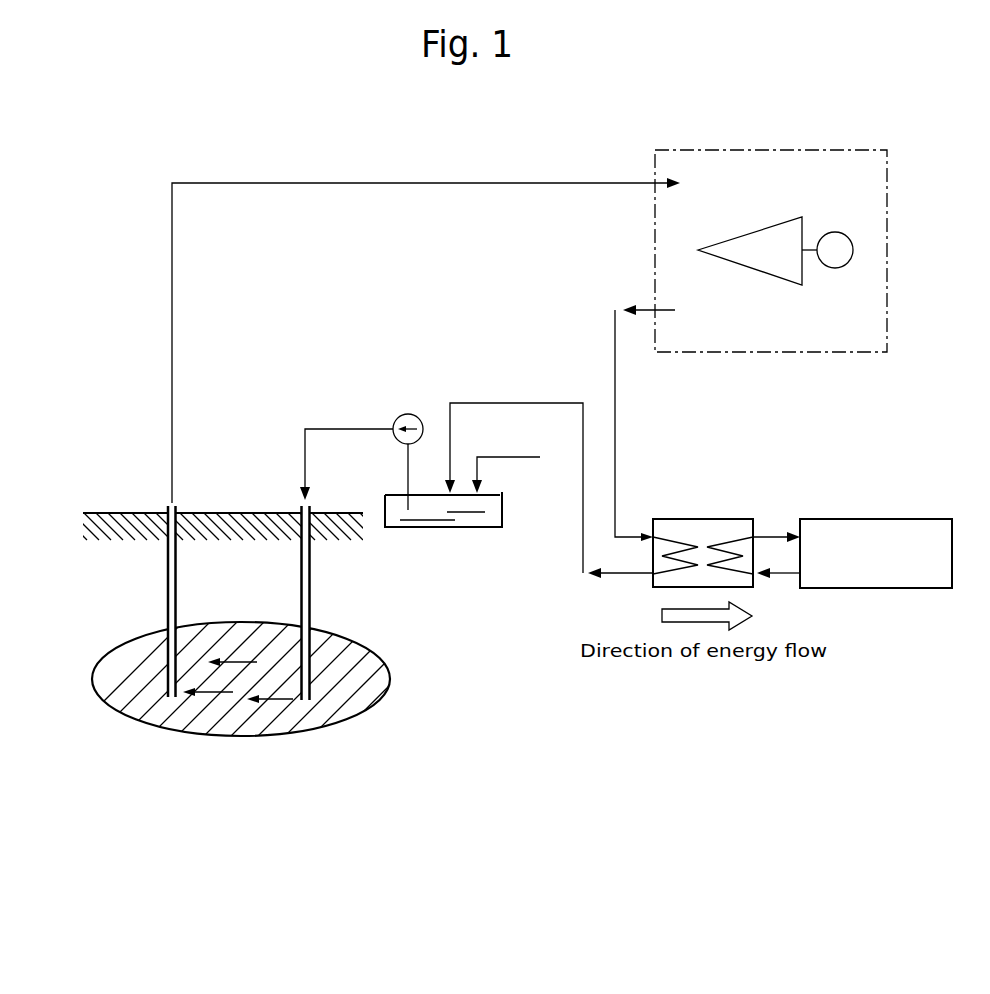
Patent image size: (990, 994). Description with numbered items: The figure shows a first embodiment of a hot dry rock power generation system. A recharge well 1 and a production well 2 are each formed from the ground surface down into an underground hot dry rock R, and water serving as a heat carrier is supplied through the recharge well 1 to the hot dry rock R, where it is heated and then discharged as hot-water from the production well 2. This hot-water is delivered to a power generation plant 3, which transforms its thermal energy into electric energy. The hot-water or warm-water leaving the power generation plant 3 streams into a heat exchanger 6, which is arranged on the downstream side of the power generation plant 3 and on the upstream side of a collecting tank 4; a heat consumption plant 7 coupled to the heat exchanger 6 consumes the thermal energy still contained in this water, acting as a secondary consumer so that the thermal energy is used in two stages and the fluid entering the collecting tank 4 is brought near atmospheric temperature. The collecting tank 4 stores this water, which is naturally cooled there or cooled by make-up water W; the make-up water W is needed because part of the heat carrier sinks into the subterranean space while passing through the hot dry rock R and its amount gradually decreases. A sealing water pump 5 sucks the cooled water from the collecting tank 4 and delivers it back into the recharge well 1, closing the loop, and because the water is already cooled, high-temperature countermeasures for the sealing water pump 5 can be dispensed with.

The recharge well 1 is at (311, 578).
The production well 2 is at (177, 578).
The power generation plant 3 is at (810, 354).
The collecting tank 4 is at (503, 512).
The sealing water pump 5 is at (408, 414).
The heat exchanger 6 is at (705, 518).
The heat consumption plant 7 is at (859, 518).
The hot dry rock R is at (277, 737).
The make-up water W is at (520, 470).